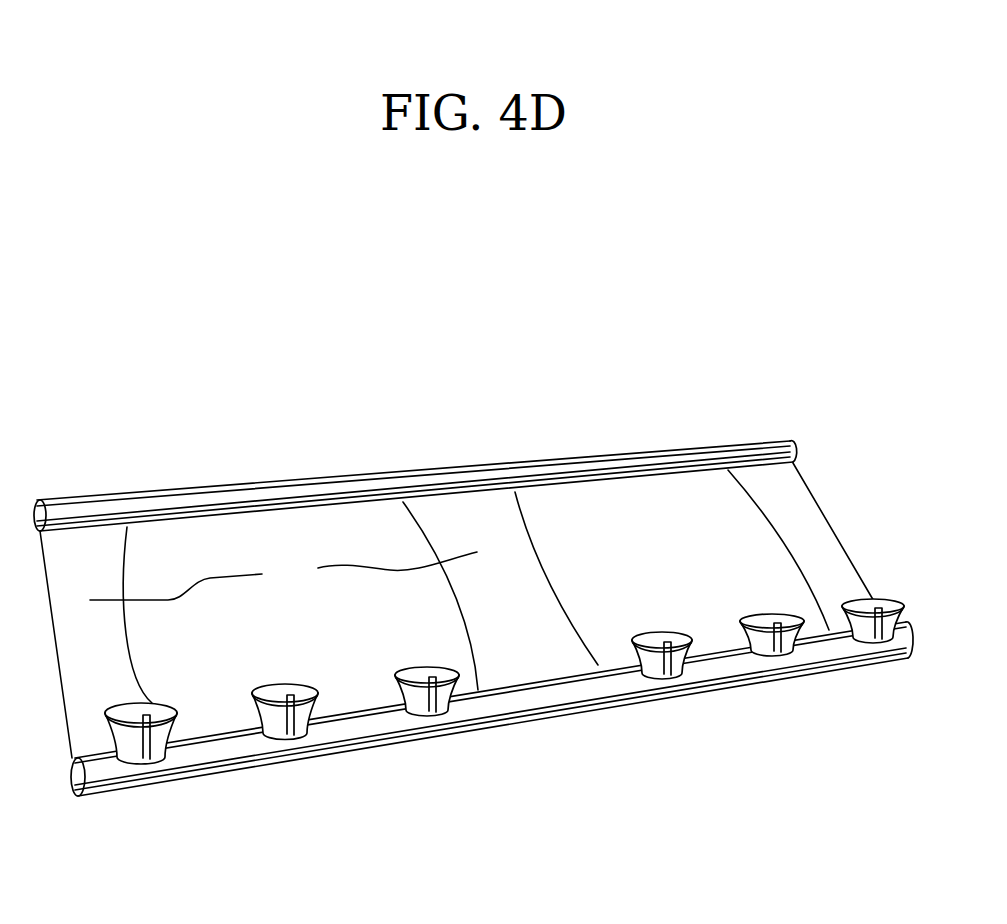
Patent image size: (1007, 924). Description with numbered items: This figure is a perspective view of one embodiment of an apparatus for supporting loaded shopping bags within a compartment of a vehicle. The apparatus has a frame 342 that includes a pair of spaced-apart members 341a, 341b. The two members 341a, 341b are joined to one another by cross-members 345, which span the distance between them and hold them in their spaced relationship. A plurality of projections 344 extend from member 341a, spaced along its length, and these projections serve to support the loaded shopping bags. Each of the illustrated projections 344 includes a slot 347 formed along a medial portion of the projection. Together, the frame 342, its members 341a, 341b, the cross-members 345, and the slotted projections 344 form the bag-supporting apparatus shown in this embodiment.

The member 341a is at (547, 697).
The member 341b is at (186, 498).
The frame 342 is at (452, 477).
The projections 344 is at (418, 705).
The cross-members 345 is at (788, 517).
The slot 347 is at (152, 703).